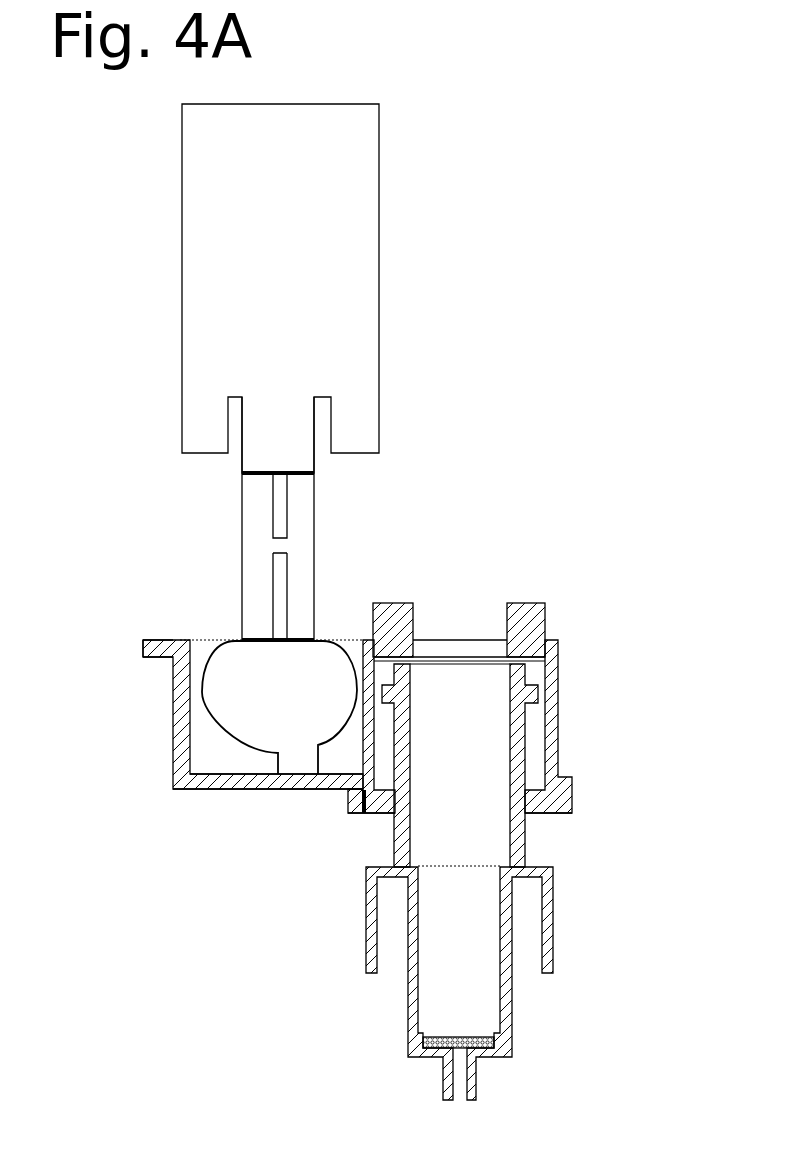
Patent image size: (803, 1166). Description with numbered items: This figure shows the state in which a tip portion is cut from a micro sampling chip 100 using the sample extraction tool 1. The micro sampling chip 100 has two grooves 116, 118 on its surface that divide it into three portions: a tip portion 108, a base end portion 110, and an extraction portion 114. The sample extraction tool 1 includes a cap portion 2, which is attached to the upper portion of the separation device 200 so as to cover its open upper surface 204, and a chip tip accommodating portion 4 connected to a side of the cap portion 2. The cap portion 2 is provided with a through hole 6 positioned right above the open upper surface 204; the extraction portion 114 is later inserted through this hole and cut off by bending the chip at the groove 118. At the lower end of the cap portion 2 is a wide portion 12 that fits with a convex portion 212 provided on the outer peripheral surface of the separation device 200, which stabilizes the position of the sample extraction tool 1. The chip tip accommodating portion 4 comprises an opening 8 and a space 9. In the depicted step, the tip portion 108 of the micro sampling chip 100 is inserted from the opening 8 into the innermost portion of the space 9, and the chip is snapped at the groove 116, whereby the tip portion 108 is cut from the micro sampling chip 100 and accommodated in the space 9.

The micro sampling chip 100 is at (319, 372).
The base end portion 110 is at (360, 265).
The extraction portion 114 is at (315, 553).
The groove 118 is at (248, 477).
The groove 116 is at (250, 637).
The tip portion 108 is at (227, 708).
The opening 8 is at (207, 640).
The space 9 is at (246, 728).
The chip tip accommodating portion 4 is at (265, 792).
The wide portion 12 is at (372, 802).
The through hole 6 is at (444, 648).
The open upper surface 204 is at (470, 662).
The sample extraction tool 1 is at (455, 729).
The cap portion 2 is at (558, 717).
The separation device 200 is at (527, 830).
The convex portion 212 is at (386, 815).